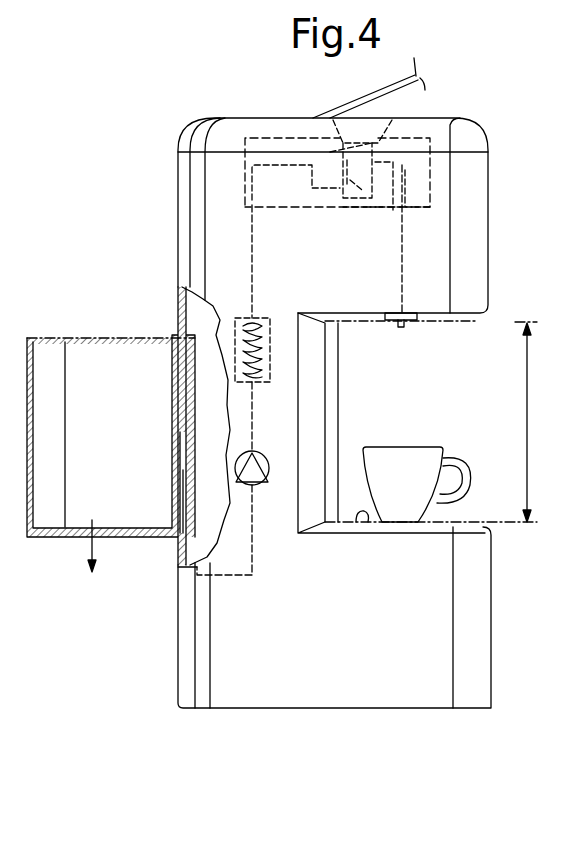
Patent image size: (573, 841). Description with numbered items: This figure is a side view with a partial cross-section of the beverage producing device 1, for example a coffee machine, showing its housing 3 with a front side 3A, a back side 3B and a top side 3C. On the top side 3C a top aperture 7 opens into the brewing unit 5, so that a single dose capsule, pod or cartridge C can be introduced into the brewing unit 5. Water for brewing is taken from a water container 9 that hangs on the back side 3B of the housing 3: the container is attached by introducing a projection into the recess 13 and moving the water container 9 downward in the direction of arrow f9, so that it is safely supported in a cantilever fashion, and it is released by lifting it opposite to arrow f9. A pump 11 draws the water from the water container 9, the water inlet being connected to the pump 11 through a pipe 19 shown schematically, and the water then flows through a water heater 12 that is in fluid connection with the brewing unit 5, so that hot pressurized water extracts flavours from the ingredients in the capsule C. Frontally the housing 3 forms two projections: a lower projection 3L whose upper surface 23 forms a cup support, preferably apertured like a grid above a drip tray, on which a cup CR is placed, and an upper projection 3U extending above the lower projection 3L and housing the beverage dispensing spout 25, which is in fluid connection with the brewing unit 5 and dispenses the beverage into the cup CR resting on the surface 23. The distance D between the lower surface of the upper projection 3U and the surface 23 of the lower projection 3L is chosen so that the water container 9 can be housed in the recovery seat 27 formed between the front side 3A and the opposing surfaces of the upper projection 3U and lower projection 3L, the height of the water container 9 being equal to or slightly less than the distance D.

The beverage producing device 1 is at (180, 115).
The housing 3 is at (225, 635).
The front side 3A is at (338, 420).
The back side 3B is at (178, 607).
The top side 3C is at (267, 118).
The lower projection 3L is at (383, 631).
The upper projection 3U is at (382, 274).
The brewing unit 5 is at (405, 135).
The top aperture 7 is at (362, 128).
The water container 9 is at (115, 352).
The pump 11 is at (258, 484).
The water heater 12 is at (275, 323).
The recess 13 is at (185, 488).
The pipe 19 is at (255, 428).
The upper surface 23 is at (353, 527).
The beverage dispensing spout 25 is at (403, 328).
The recovery seat 27 is at (432, 404).
The capsule C is at (358, 190).
The cup (recipient) CR is at (412, 457).
The distance D is at (535, 422).
The arrow f9 is at (93, 552).